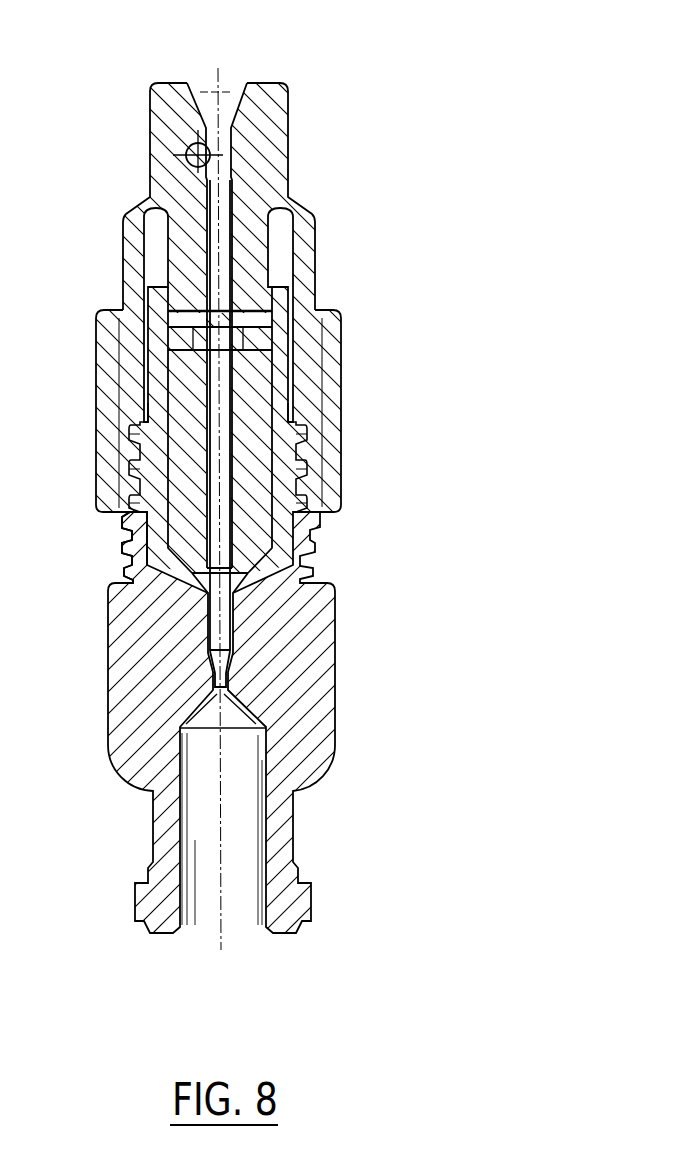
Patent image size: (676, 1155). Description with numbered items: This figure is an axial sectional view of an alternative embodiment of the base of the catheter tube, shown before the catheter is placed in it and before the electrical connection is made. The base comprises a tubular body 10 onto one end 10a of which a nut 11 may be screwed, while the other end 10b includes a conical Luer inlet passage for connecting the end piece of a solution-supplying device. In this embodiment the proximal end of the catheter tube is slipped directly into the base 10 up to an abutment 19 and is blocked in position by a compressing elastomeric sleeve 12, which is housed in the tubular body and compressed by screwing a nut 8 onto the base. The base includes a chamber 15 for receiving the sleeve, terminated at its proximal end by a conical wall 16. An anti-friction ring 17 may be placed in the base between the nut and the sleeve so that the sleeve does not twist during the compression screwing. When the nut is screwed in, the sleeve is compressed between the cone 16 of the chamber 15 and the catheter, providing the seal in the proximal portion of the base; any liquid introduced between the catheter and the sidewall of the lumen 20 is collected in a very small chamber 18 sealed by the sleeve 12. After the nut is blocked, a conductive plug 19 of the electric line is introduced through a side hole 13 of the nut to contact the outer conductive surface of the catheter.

The nut 8 is at (303, 263).
The tubular body 10 is at (290, 632).
The end of the tubular body 10a is at (225, 108).
The other end of the tubular body 10b is at (240, 897).
The nut 11 is at (177, 200).
The elastomeric sleeve 12 is at (247, 527).
The side hole 13 is at (188, 146).
The chamber 15 is at (275, 450).
The conical wall 16 is at (177, 570).
The anti-friction ring 17 is at (257, 335).
The small chamber 18 is at (228, 583).
The abutment 19 is at (232, 673).
The lumen 20 is at (237, 636).